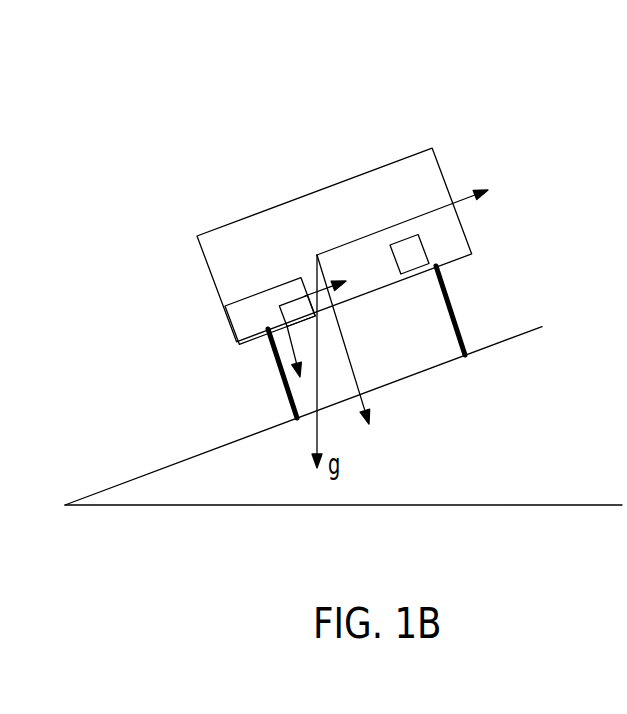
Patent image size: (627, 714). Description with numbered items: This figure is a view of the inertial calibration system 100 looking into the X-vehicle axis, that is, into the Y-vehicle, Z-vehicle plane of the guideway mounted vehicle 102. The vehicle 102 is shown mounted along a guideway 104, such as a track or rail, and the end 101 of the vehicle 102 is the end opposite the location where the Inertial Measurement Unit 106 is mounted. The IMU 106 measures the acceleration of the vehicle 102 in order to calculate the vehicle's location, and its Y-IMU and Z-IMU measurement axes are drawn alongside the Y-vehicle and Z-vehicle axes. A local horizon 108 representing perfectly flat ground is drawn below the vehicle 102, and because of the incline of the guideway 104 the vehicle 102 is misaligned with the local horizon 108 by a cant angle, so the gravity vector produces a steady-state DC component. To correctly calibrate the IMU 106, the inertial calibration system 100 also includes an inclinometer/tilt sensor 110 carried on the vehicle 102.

The inertial calibration system 100 is at (118, 124).
The end 101 is at (275, 227).
The guideway mounted vehicle 102 is at (420, 152).
The guideway 104 is at (458, 376).
The Inertial Measurement Unit (IMU) 106 is at (230, 326).
The local horizon 108 is at (390, 506).
The inclinometer/tilt sensor 110 is at (398, 240).